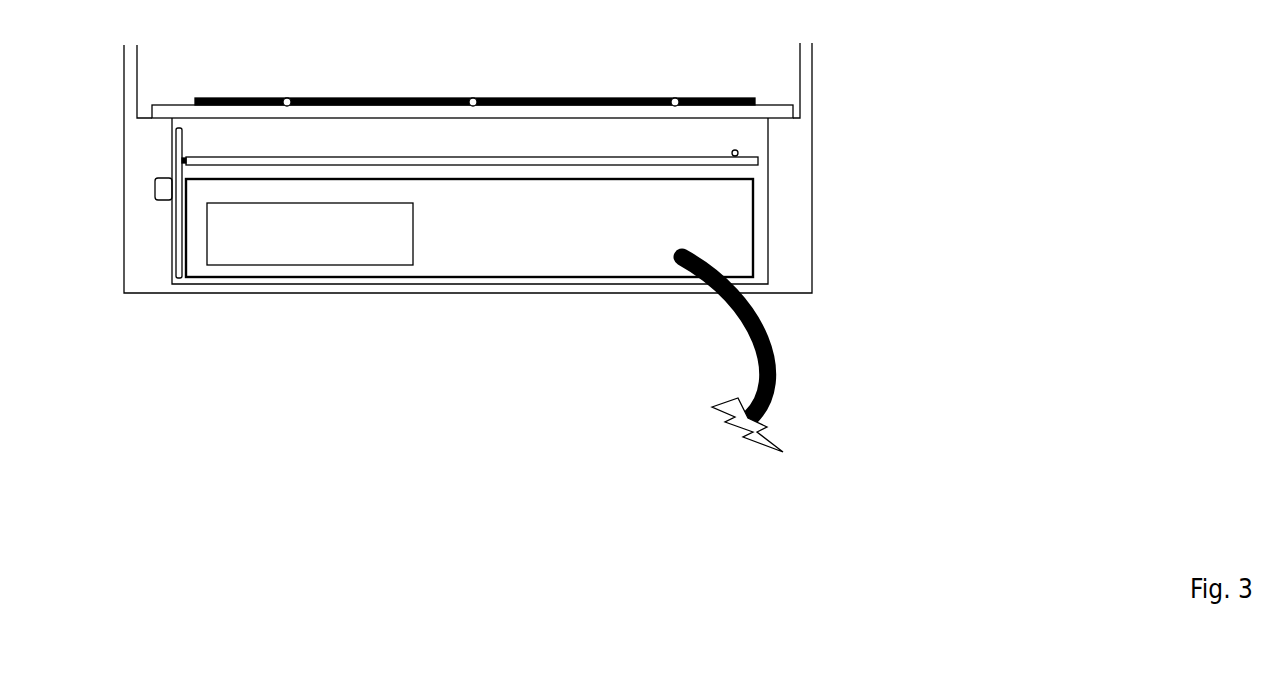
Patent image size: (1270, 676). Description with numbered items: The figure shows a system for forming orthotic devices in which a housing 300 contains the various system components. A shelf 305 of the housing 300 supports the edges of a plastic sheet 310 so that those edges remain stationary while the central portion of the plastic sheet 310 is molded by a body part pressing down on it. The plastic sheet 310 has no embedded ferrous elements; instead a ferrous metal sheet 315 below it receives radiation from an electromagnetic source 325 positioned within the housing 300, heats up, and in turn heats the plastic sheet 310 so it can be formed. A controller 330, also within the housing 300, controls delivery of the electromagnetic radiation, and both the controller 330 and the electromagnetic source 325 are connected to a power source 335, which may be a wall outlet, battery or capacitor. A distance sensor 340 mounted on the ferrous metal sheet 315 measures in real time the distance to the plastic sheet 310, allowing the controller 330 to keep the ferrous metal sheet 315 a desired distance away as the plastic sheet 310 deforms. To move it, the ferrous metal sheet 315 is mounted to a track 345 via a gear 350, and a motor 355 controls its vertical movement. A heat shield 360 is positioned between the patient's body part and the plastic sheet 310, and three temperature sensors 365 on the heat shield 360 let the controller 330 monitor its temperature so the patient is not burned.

The housing 300 is at (797, 287).
The shelf 305 is at (797, 120).
The plastic sheet 310 is at (770, 112).
The ferrous metal sheet 315 is at (275, 152).
The electromagnetic source 325 is at (537, 267).
The controller 330 is at (328, 261).
The power source 335 is at (712, 408).
The distance sensor 340 is at (737, 156).
The track 345 is at (175, 148).
The gear 350 is at (181, 161).
The motor 355 is at (153, 190).
The heat shield 360 is at (207, 98).
The temperature sensors 365 is at (471, 99).